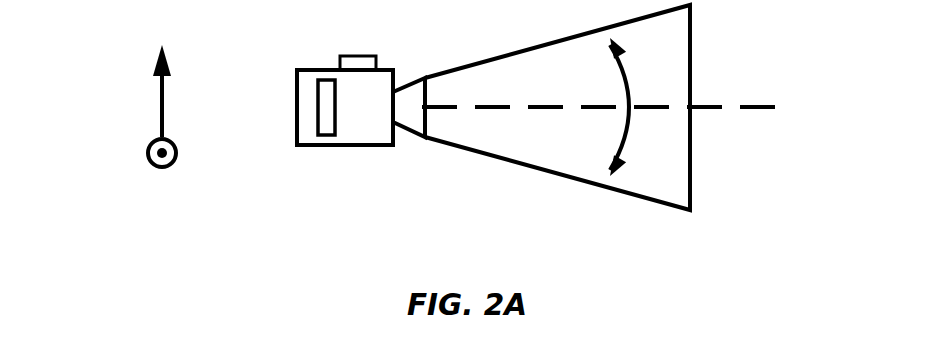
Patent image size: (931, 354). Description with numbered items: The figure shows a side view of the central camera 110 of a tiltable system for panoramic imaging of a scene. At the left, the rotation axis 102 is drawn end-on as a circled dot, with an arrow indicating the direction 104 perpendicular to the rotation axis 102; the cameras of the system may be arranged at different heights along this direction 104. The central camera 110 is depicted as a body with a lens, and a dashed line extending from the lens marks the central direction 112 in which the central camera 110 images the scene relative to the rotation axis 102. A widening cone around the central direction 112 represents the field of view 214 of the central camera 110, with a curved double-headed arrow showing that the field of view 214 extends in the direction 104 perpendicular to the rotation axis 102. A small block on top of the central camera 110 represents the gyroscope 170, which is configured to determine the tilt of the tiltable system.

The rotation axis 102 is at (157, 170).
The direction perpendicular to the rotation axis 104 is at (152, 63).
The central camera 110 is at (333, 165).
The central direction 112 is at (760, 105).
The gyroscope 170 is at (362, 62).
The field of view 214 is at (631, 126).